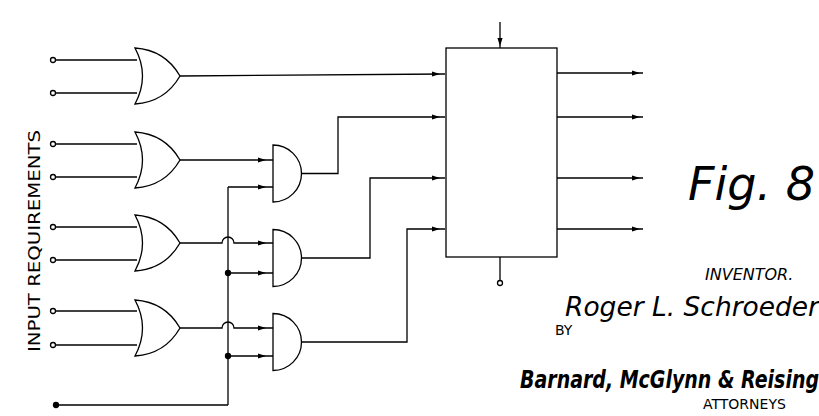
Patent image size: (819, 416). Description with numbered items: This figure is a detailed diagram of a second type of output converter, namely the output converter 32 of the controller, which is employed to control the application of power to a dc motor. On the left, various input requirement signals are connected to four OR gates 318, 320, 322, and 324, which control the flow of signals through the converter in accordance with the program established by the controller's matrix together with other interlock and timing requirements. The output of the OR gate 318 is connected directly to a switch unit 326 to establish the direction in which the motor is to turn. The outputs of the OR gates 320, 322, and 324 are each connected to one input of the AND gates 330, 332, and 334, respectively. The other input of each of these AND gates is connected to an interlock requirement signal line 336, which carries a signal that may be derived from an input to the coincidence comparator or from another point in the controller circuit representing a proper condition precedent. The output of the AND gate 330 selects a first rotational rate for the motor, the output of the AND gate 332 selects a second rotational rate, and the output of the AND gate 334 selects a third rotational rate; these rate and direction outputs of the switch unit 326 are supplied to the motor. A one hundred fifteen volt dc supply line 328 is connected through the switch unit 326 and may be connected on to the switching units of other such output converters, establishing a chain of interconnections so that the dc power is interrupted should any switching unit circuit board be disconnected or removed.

The output converter 32 is at (284, 66).
The OR gate 318 is at (157, 72).
The OR gate 320 is at (157, 157).
The OR gate 322 is at (163, 246).
The OR gate 324 is at (150, 332).
The switch unit 326 is at (557, 56).
The 115 volt dc supply line 328 is at (497, 34).
The AND gate 330 is at (287, 162).
The AND gate 332 is at (288, 252).
The AND gate 334 is at (287, 335).
The interlock requirement signal line 336 is at (228, 393).